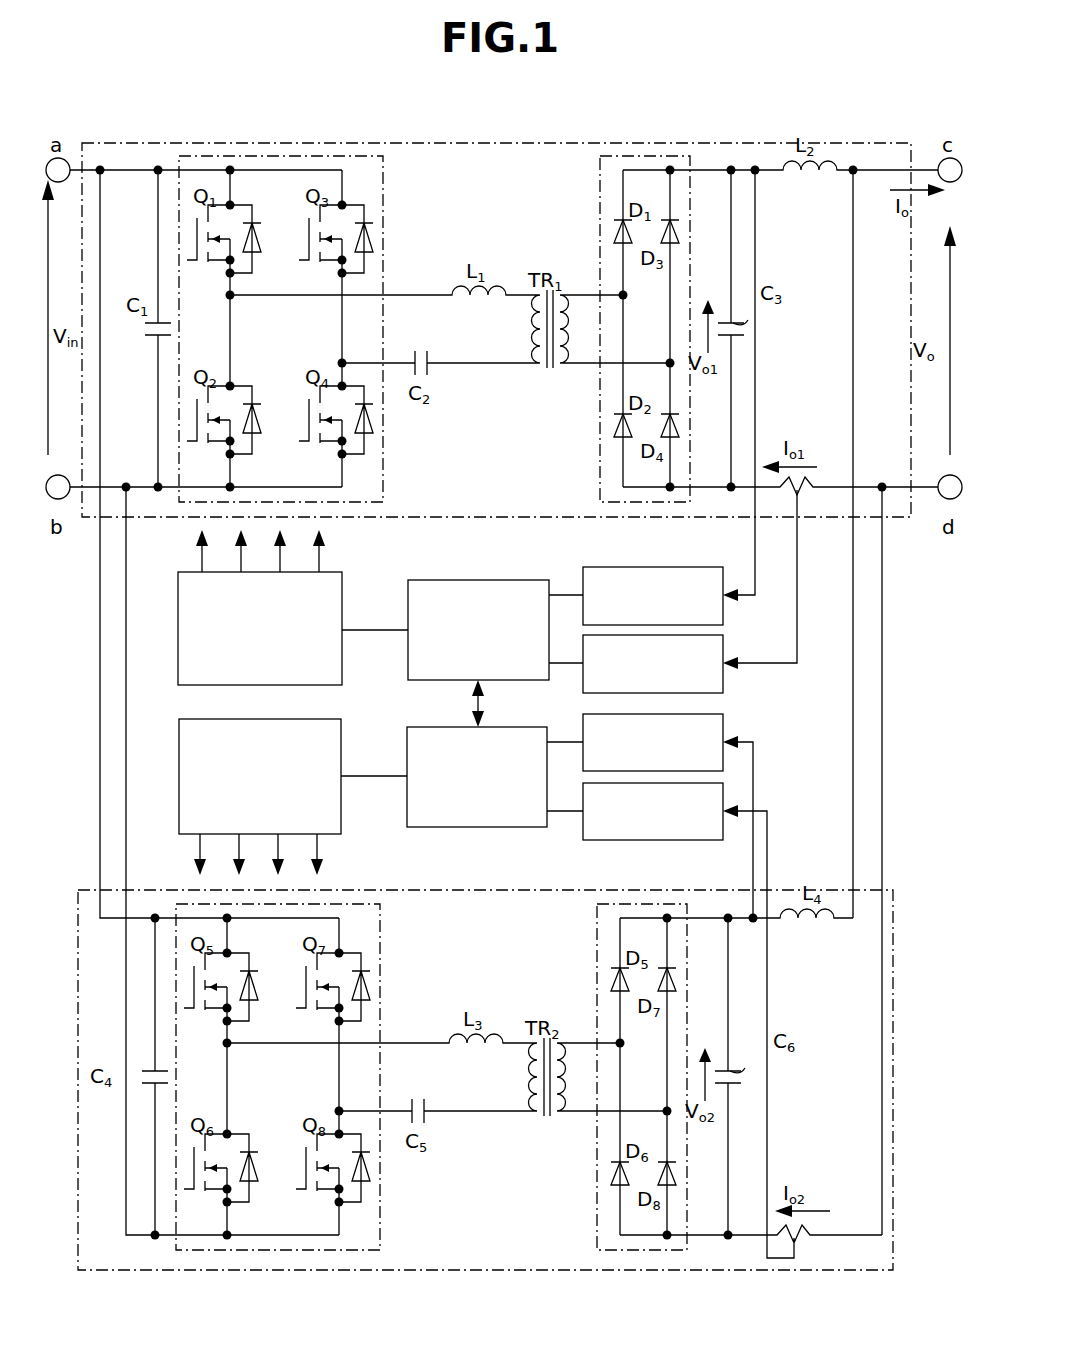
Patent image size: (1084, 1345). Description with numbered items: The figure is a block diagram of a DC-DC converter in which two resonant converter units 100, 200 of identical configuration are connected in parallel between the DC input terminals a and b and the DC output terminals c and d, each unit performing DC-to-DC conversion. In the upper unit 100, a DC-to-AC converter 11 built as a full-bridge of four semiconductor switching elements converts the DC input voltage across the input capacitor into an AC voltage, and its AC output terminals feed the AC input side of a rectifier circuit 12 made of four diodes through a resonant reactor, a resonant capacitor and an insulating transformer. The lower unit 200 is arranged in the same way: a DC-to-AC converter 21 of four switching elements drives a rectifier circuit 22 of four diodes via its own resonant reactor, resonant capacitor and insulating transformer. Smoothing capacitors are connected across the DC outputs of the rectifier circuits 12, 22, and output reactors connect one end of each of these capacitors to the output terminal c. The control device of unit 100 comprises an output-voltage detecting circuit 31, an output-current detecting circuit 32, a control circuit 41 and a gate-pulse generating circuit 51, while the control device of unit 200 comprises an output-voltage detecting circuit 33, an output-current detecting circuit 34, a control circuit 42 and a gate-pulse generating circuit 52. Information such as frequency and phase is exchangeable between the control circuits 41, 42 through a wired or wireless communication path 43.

The resonant converter unit 100 is at (84, 520).
The resonant converter unit 200 is at (80, 888).
The DC-to-AC converter 11 is at (383, 168).
The rectifier circuit 12 is at (600, 168).
The DC-to-AC converter 21 is at (380, 916).
The rectifier circuit 22 is at (597, 916).
The output-voltage detecting circuit 31 is at (705, 569).
The output-current detecting circuit 32 is at (723, 645).
The output-voltage detecting circuit 33 is at (723, 719).
The output-current detecting circuit 34 is at (704, 840).
The control circuit 41 is at (497, 589).
The control circuit 42 is at (487, 819).
The communication path 43 is at (470, 708).
The gate-pulse generating circuit 51 is at (185, 588).
The gate-pulse generating circuit 52 is at (183, 772).